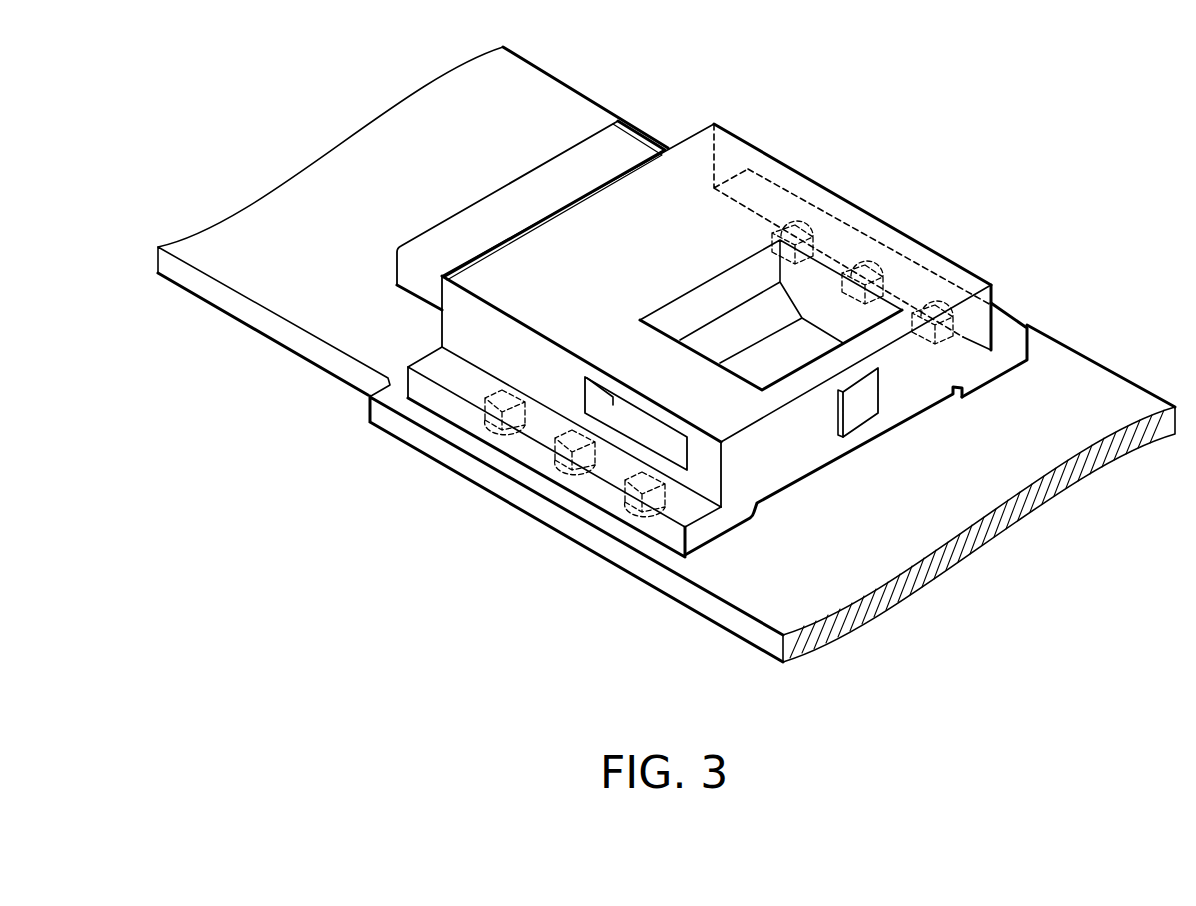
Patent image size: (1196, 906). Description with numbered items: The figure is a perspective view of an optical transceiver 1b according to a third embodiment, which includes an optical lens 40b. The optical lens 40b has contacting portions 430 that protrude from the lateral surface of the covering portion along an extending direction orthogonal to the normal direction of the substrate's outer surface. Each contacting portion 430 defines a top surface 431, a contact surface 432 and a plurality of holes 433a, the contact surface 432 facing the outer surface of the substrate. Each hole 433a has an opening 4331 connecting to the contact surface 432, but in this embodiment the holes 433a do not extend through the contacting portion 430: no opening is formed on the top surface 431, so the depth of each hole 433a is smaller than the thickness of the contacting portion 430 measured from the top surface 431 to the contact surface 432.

The optical transceiver 1b is at (1043, 80).
The optical lens 40b is at (740, 128).
The contacting portion 430 is at (414, 349).
The top surface 431 is at (684, 509).
The contact surface 432 is at (667, 548).
The hole 433a is at (497, 431).
The opening 4331 is at (507, 443).